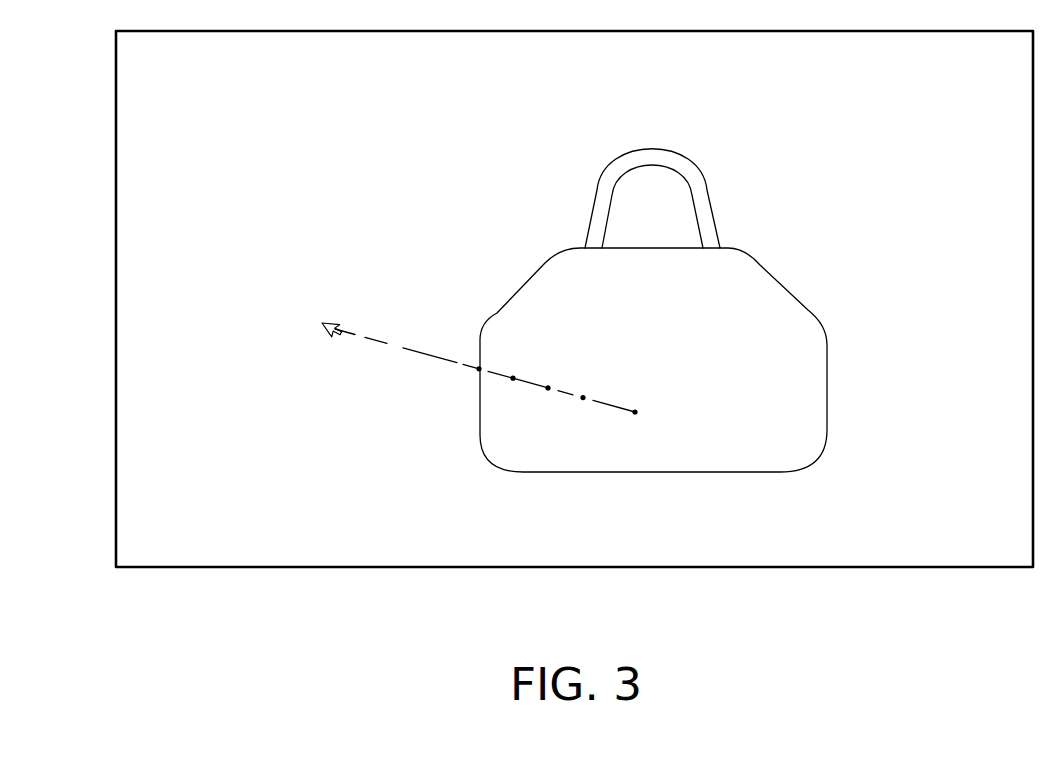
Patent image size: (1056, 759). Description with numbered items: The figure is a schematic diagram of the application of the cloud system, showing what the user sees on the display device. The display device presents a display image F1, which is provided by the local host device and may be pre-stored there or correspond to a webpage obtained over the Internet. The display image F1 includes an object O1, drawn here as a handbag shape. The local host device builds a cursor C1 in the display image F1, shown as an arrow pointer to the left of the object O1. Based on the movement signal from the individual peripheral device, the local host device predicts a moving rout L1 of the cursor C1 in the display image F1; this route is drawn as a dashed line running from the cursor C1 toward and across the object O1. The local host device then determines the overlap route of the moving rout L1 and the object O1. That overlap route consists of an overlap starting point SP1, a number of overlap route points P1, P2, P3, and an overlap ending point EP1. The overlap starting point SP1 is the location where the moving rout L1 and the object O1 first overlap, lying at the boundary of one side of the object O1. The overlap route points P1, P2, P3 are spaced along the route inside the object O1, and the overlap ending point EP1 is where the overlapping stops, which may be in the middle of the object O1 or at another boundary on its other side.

The display image F1 is at (116, 103).
The object O1 is at (777, 278).
The cursor C1 is at (320, 334).
The moving rout L1 is at (405, 348).
The overlap starting point SP1 is at (457, 381).
The overlap route point P1 is at (503, 391).
The overlap route point P2 is at (538, 401).
The overlap route point P3 is at (595, 413).
The overlap ending point EP1 is at (657, 425).